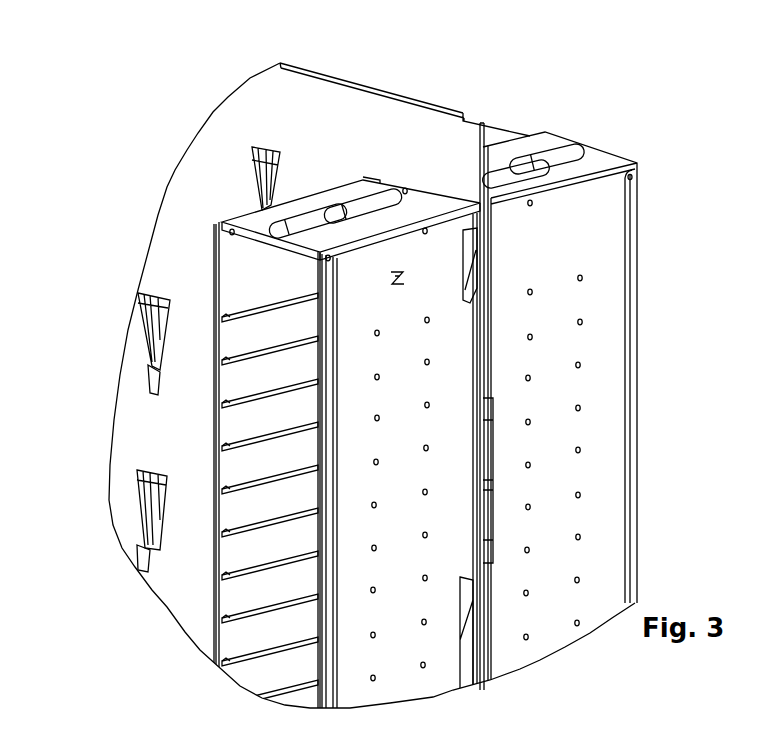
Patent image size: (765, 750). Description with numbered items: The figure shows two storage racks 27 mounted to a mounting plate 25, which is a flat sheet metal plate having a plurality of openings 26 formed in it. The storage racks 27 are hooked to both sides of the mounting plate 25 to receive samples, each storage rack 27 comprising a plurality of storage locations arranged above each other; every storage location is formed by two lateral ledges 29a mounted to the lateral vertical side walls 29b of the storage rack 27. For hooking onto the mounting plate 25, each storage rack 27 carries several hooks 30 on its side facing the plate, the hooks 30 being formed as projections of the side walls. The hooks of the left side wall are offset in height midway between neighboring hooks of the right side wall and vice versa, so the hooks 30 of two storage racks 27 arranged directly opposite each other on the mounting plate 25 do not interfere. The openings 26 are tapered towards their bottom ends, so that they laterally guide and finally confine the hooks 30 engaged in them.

The mounting plate 25 is at (311, 73).
The openings 26 is at (140, 303).
The storage rack 27 is at (52, 740).
The lateral ledges 29a is at (215, 623).
The lateral vertical side walls 29b is at (213, 598).
The hooks 30 is at (147, 370).